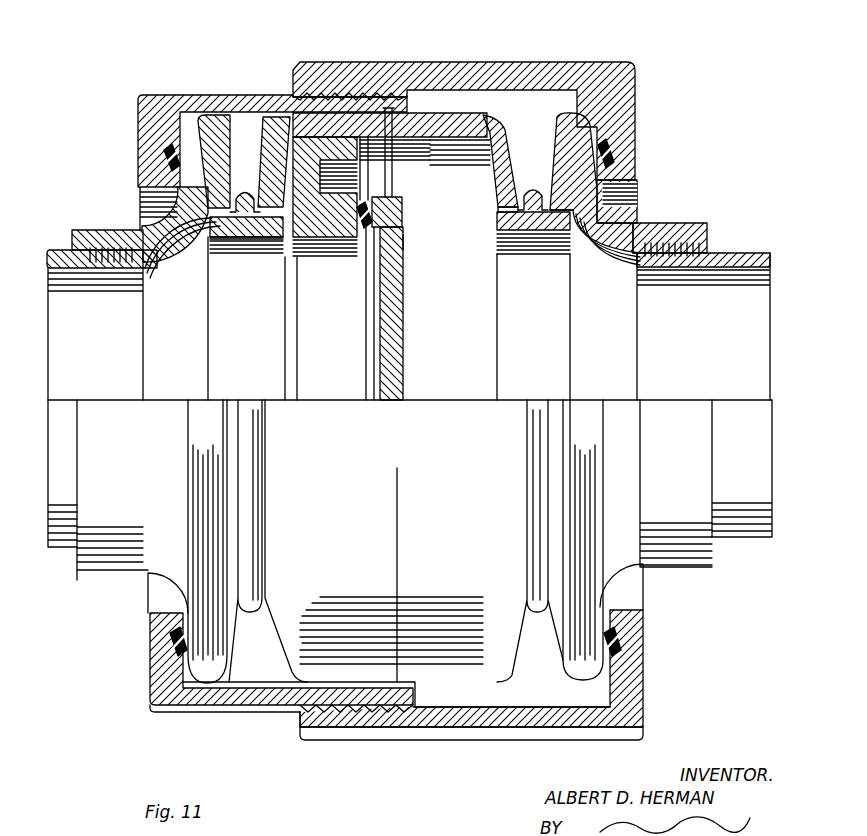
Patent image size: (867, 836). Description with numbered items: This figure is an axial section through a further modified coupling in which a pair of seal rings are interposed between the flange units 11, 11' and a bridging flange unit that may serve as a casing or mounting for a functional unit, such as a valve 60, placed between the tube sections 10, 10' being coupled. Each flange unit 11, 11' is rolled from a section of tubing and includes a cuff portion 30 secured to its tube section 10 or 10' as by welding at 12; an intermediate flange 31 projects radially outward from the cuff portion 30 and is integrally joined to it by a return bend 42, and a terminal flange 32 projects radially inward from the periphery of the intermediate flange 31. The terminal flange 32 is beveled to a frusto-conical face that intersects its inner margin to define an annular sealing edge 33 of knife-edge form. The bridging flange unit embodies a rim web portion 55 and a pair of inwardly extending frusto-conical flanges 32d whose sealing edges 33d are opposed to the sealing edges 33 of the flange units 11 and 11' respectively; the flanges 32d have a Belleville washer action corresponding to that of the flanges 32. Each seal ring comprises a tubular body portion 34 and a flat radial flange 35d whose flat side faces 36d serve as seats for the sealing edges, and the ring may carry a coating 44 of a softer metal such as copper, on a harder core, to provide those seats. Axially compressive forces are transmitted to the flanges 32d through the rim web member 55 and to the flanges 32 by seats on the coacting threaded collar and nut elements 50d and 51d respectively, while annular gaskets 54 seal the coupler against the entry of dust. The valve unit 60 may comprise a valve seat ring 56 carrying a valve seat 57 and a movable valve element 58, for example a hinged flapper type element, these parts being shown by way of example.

The threaded nut element 51d is at (240, 100).
The threaded collar element 50d is at (630, 78).
The rim web portion 55 is at (443, 118).
The valve seat ring 56 is at (335, 232).
The valve seat 57 is at (378, 218).
The movable valve element 58 is at (398, 282).
The valve 60 is at (418, 246).
The terminal flange 32 is at (213, 130).
The frusto-conical flange 32d is at (266, 148).
The seal 36d is at (241, 190).
The seal 35d is at (530, 193).
The sealing edge 33d is at (508, 202).
The annular sealing edge 33 is at (227, 243).
The coating 44 is at (240, 243).
The tubular body portion 34 is at (257, 243).
The flange unit 11' is at (146, 232).
The flange unit 11 is at (643, 198).
The intermediate flange 31 is at (588, 187).
The welding 12 is at (672, 243).
The return bend 42 is at (612, 242).
The cuff portion 30 is at (707, 228).
The tube section 10 is at (704, 397).
The tube section 10' is at (88, 405).
The annular gasket 54 is at (175, 640).